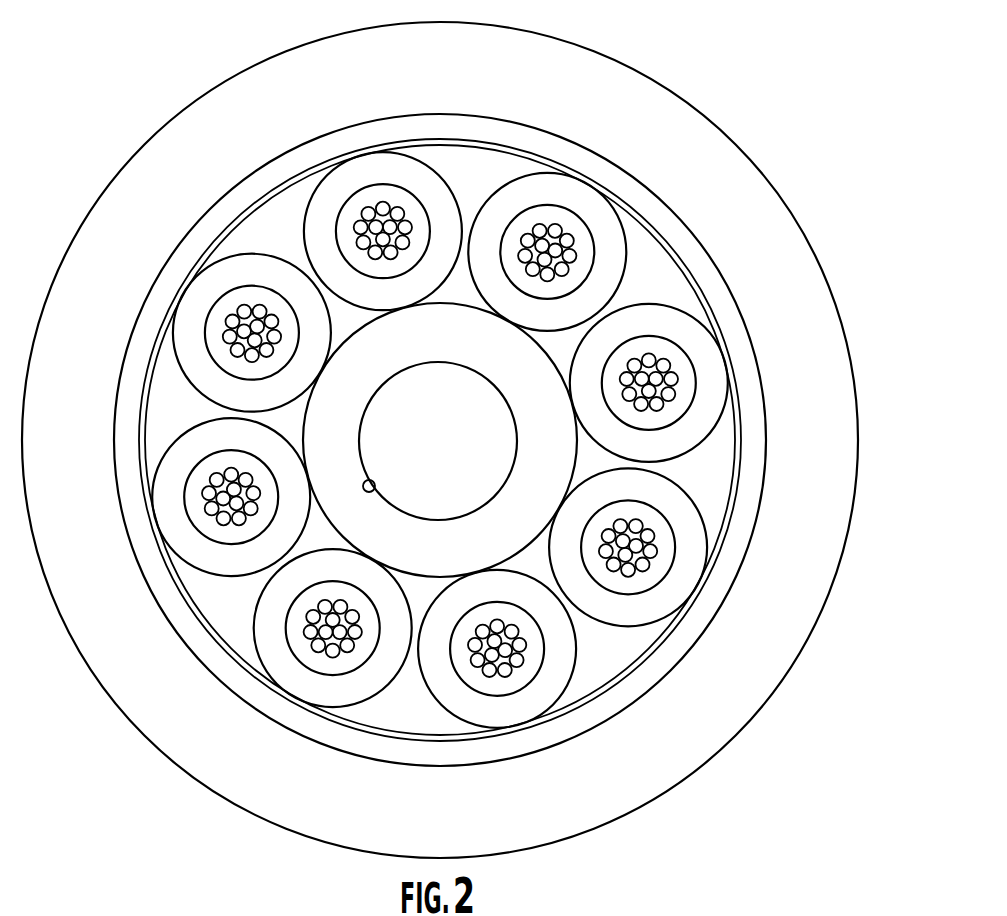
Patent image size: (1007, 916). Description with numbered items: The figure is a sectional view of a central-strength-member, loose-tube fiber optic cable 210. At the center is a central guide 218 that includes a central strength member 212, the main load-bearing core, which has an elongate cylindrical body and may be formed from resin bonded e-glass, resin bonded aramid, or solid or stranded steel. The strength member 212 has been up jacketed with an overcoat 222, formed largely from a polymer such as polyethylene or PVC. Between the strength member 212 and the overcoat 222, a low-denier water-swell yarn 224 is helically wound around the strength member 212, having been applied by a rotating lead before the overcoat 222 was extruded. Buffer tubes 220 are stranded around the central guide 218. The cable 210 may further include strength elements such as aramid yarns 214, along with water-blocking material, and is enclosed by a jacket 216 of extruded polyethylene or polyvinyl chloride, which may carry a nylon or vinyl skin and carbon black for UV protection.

The fiber optic cable 210 is at (104, 124).
The central strength member 212 is at (456, 455).
The aramid yarns 214 is at (753, 468).
The jacket 216 is at (757, 202).
The central guide 218 is at (558, 349).
The buffer tubes 220 is at (265, 265).
The overcoat 222 is at (300, 427).
The yarn 224 is at (375, 484).